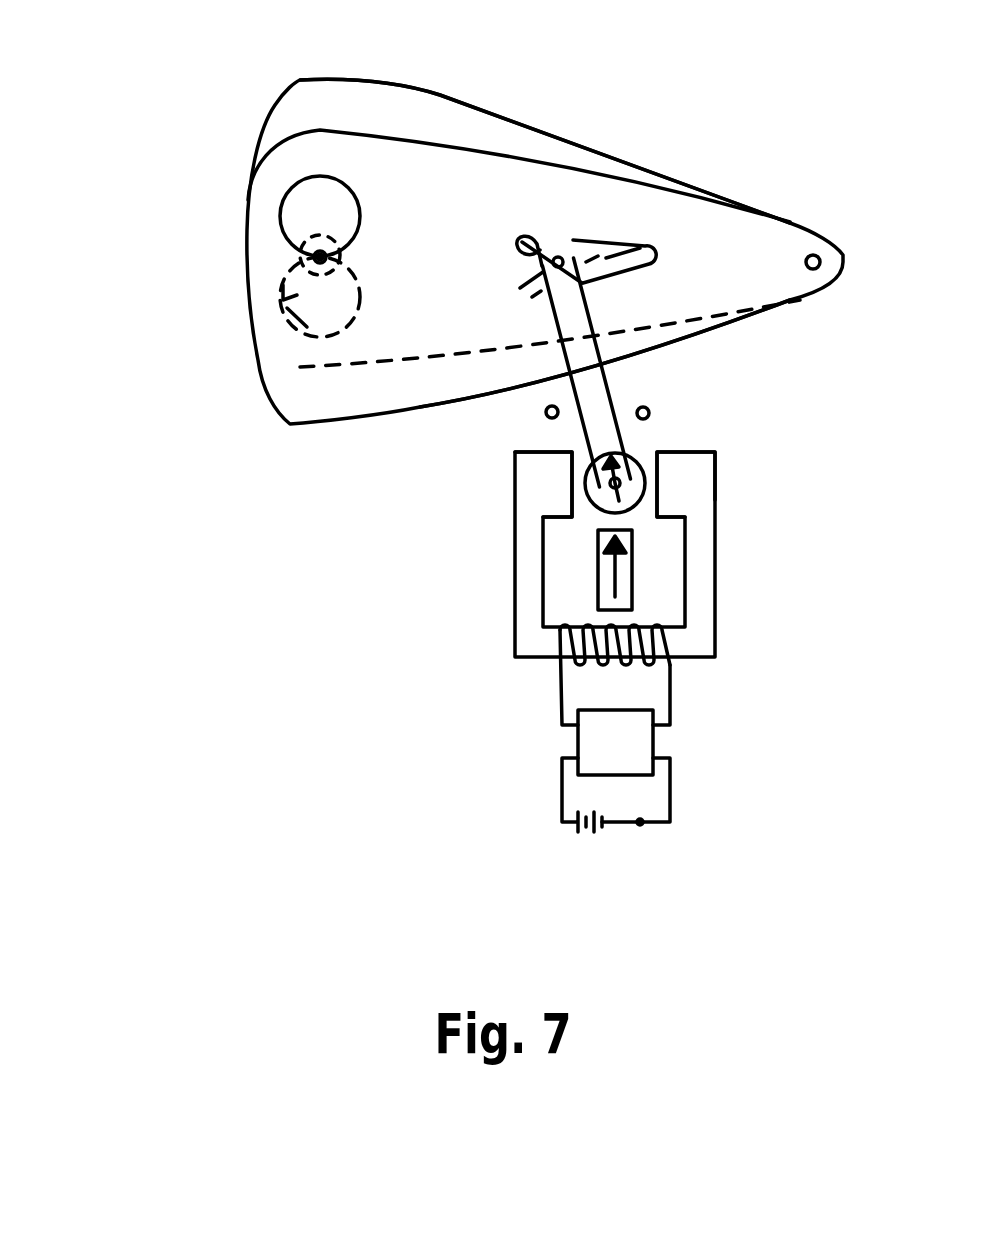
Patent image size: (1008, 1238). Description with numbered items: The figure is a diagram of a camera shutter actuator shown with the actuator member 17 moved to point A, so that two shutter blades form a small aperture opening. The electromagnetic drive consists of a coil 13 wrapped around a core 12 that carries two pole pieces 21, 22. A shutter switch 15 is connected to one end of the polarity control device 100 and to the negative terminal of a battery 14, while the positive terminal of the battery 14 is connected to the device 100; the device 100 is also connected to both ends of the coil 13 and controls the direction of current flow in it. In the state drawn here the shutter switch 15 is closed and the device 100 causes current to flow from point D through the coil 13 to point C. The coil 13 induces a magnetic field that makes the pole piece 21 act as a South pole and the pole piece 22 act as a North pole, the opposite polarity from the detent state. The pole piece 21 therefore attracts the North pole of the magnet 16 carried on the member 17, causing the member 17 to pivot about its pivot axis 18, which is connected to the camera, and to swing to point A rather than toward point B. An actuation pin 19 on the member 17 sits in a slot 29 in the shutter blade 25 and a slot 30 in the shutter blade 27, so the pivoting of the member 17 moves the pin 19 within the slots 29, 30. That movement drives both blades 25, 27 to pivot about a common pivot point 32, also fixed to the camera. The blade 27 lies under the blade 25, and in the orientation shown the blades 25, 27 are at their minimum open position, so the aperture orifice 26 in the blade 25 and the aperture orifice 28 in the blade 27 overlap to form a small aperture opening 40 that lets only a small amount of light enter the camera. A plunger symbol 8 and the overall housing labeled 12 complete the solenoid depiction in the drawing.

The plunger 8 is at (628, 578).
The core 12 is at (525, 610).
The coil 13 is at (562, 686).
The battery 14 is at (573, 832).
The shutter switch 15 is at (637, 825).
The magnet 16 is at (590, 488).
The member 17 is at (595, 418).
The pivot axis 18 is at (612, 494).
The actuation pin 19 is at (558, 262).
The pole piece 21 is at (553, 467).
The pole piece 22 is at (688, 495).
The shutter blade 25 is at (312, 390).
The aperture orifice 26 is at (280, 205).
The shutter blade 27 is at (352, 115).
The aperture orifice 28 is at (300, 312).
The slot 29 is at (752, 316).
The slot 30 is at (593, 238).
The pivot point 32 is at (820, 262).
The small aperture opening 40 is at (303, 257).
The polarity control device 100 is at (628, 735).
The point A is at (548, 406).
The point B is at (648, 408).
The point C is at (562, 711).
The point D is at (672, 680).